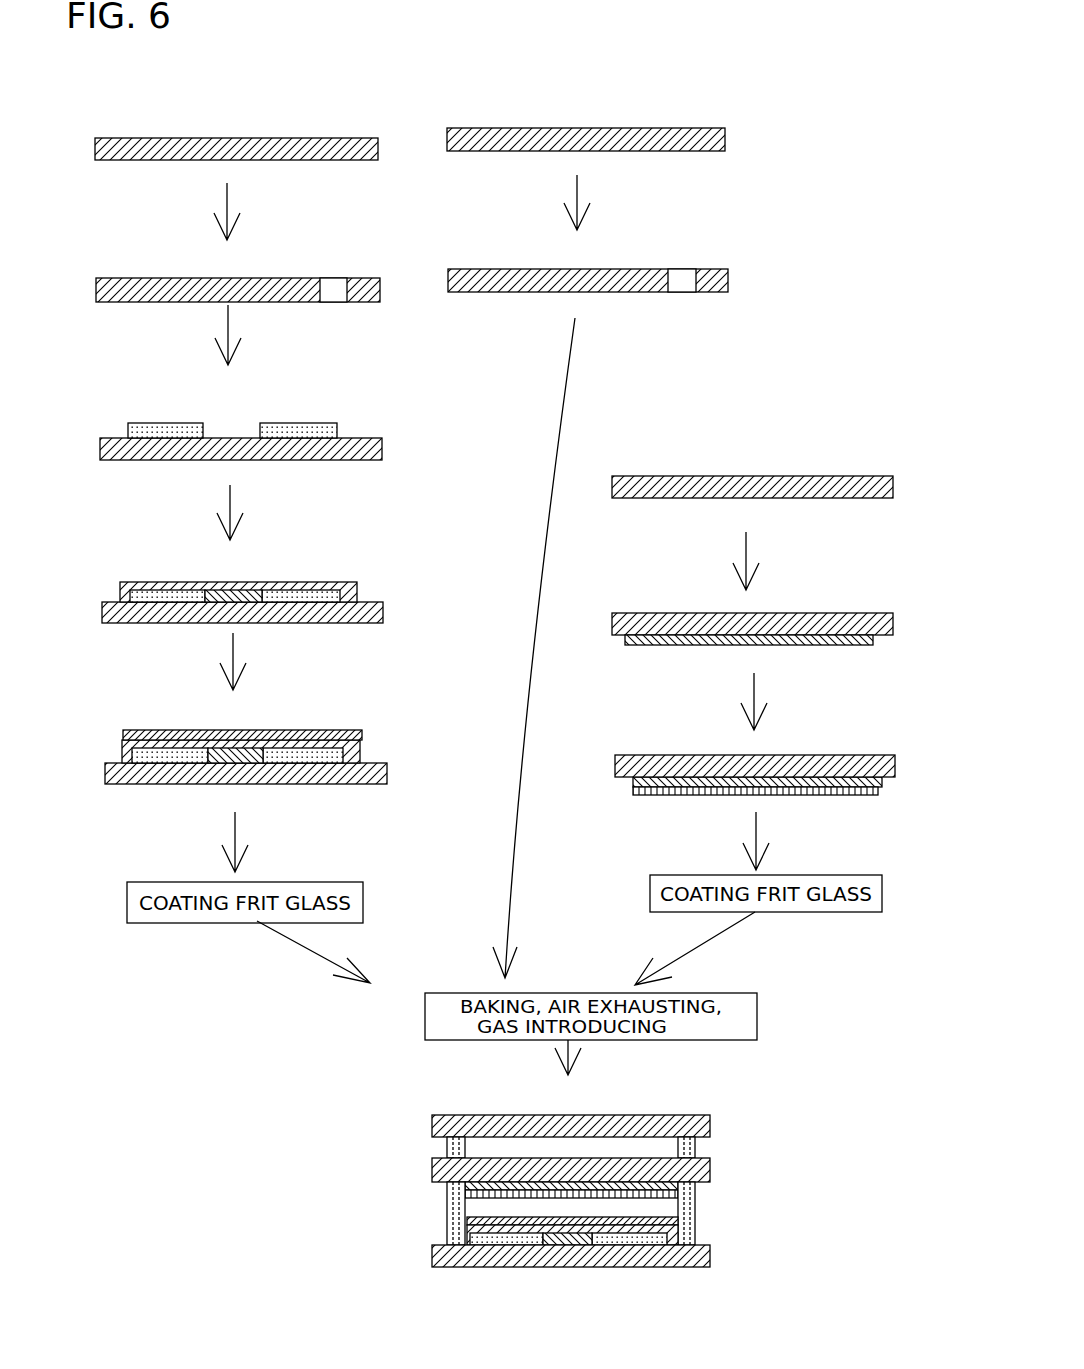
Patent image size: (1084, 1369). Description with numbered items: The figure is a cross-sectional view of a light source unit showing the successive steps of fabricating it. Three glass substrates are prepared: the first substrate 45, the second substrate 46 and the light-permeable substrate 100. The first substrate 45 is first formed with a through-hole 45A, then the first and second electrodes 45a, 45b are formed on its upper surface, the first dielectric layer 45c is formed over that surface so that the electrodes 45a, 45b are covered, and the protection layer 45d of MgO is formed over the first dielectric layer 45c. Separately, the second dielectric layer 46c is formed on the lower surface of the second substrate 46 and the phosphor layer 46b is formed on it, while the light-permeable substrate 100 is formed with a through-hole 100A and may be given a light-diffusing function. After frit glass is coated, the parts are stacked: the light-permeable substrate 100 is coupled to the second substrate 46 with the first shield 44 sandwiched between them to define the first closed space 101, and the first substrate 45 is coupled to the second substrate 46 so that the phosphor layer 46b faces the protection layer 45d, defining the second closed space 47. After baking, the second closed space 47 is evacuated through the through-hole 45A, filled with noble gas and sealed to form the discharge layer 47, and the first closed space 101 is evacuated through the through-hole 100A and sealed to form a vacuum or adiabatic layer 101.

The first substrate 45 is at (300, 140).
The through-hole 45A is at (338, 296).
The first electrode 45a is at (178, 428).
The second electrode 45b is at (315, 430).
The first dielectric layer 45c is at (310, 582).
The protection layer 45d is at (340, 730).
The light-permeable substrate 100 is at (652, 128).
The through-hole 100A is at (686, 286).
The second substrate 46 is at (826, 476).
The second dielectric layer 46c is at (858, 645).
The phosphor layer 46b is at (878, 791).
The first closed space 101 is at (643, 1145).
The second closed space 47 is at (493, 1207).
The first shield 44 is at (692, 1231).